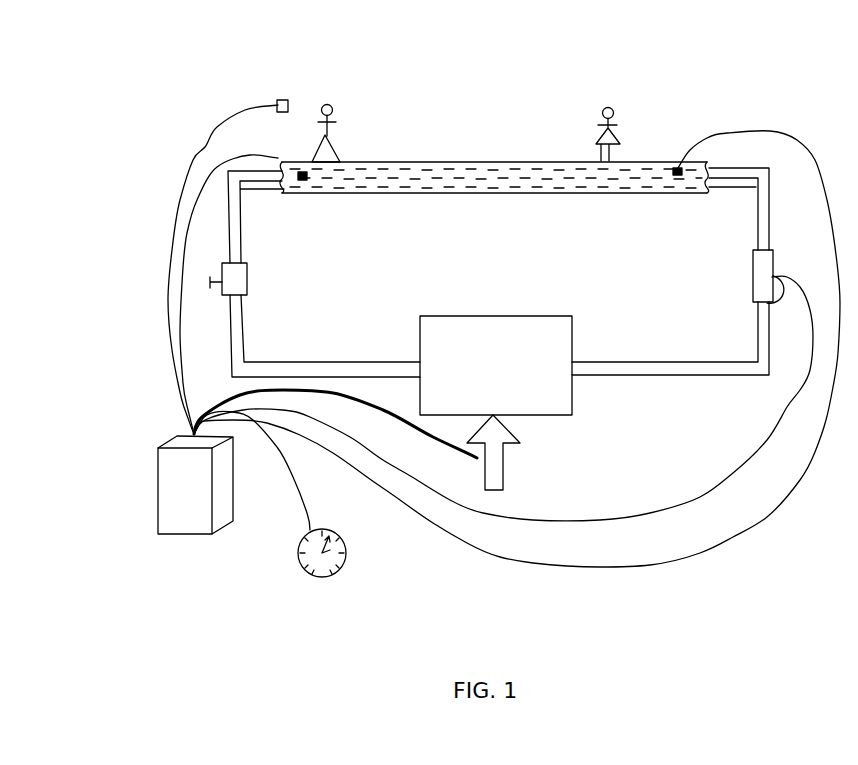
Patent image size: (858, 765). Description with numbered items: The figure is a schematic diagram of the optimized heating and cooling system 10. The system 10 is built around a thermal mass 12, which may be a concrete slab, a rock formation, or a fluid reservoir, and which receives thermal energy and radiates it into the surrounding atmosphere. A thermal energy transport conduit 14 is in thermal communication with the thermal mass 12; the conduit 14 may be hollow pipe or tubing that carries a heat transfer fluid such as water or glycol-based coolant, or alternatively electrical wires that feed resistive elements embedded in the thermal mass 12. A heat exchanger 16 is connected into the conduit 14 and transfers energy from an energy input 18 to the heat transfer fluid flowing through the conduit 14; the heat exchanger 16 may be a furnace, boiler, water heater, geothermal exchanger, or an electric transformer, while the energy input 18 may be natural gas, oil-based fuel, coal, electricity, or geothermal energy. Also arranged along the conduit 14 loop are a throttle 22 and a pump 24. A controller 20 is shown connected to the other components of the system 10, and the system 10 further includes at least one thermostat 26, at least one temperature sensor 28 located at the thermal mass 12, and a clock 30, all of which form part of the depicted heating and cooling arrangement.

The optimized heating and cooling system 10 is at (718, 66).
The thermal mass 12 is at (457, 160).
The thermal energy transport conduit 14 is at (259, 190).
The heat exchanger 16 is at (508, 314).
The energy input 18 is at (503, 477).
The controller 20 is at (158, 497).
The throttle 22 is at (247, 280).
The pump 24 is at (753, 272).
The thermostat 26 is at (287, 100).
The temperature sensor 28 is at (303, 180).
The clock 30 is at (343, 570).